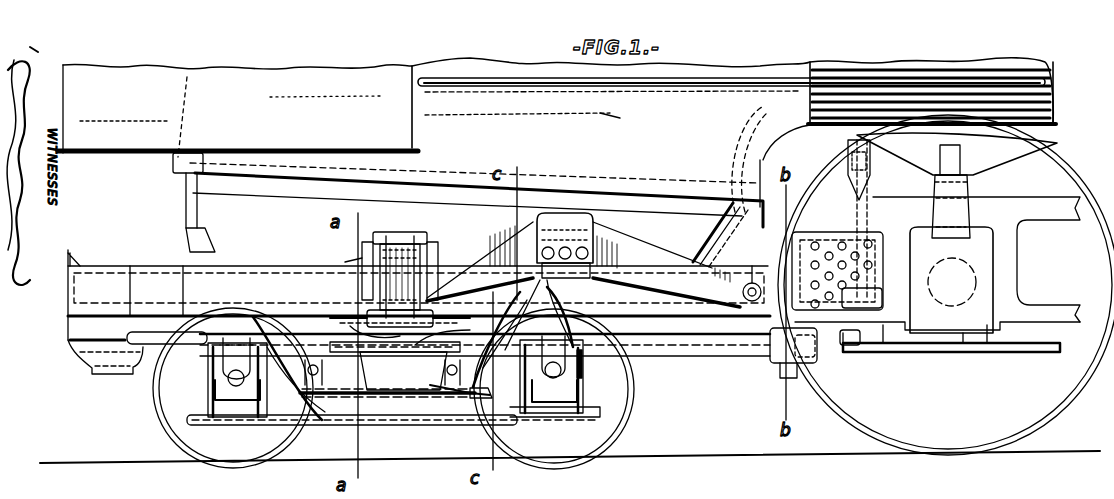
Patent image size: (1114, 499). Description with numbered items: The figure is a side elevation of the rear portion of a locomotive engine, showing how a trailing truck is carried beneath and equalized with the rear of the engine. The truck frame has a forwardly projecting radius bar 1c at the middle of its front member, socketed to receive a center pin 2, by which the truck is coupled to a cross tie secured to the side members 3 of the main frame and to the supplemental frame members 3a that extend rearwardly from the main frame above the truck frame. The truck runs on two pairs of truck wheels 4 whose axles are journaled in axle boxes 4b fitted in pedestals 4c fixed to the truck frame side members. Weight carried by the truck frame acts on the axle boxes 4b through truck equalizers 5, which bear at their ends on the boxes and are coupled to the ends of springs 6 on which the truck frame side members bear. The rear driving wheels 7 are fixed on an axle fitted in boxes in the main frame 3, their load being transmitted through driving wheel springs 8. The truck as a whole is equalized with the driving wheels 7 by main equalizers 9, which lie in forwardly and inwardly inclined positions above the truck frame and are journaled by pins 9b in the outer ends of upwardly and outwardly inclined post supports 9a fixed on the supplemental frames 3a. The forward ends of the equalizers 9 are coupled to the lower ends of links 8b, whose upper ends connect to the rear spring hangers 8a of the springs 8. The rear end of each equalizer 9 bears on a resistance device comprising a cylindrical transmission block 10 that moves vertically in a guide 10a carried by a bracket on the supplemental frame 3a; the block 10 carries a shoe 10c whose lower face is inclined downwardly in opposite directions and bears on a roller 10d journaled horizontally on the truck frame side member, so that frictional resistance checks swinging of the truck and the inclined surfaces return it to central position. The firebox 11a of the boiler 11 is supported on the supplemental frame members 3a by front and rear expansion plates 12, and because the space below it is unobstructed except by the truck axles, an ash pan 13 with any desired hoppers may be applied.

The radius bar 1c is at (745, 358).
The center pin 2 is at (812, 370).
The side members of the main frame 3 is at (1035, 212).
The supplemental frame members 3a is at (290, 266).
The truck wheels 4 is at (165, 430).
The axle boxes 4b is at (210, 377).
The pedestals 4c is at (192, 398).
The truck equalizers 5 is at (360, 396).
The springs 6 is at (470, 396).
The rear driving wheels 7 is at (868, 432).
The driving wheel springs 8 is at (990, 160).
The rear spring hangers 8a is at (855, 178).
The links 8b is at (862, 208).
The main equalizers 9 is at (630, 260).
The post supports 9a is at (572, 294).
The pins 9b is at (565, 245).
The transmission block 10 is at (396, 236).
The guide 10a is at (365, 268).
The shoe 10c is at (434, 320).
The roller 10d is at (382, 366).
The boiler 11 is at (940, 64).
The firebox 11a is at (731, 112).
The expansion plates 12 is at (184, 205).
The ash pan 13 is at (188, 247).